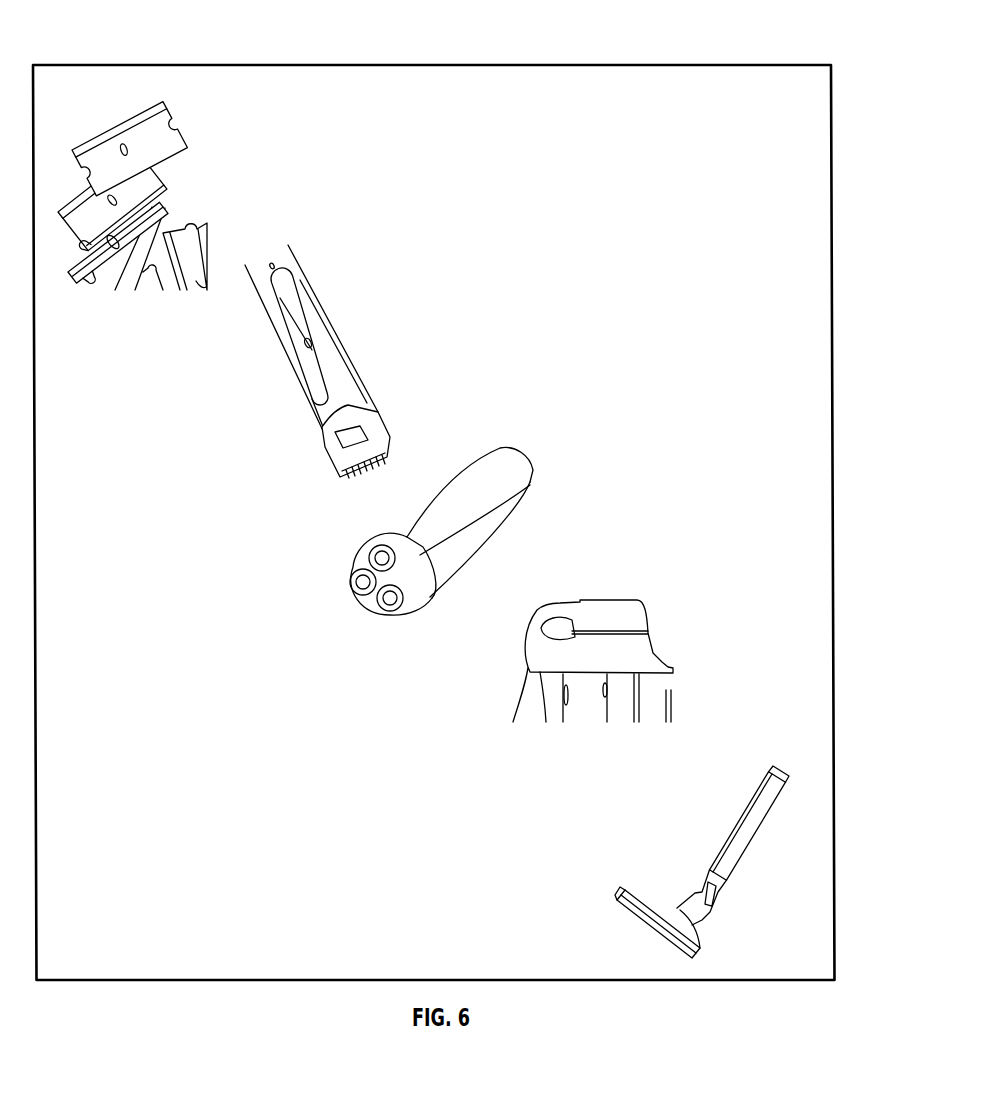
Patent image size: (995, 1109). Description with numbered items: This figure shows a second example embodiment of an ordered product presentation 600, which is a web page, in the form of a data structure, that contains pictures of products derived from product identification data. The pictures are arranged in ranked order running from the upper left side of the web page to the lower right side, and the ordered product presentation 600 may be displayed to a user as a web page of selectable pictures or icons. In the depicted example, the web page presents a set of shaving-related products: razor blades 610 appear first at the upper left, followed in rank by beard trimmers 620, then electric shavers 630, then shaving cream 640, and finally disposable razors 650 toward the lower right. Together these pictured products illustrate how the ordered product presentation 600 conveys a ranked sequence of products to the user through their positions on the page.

The ordered product presentation 600 is at (700, 65).
The razor blades 610 is at (198, 118).
The beard trimmers 620 is at (302, 277).
The electric shavers 630 is at (465, 468).
The shaving cream 640 is at (602, 600).
The disposable razors 650 is at (743, 825).